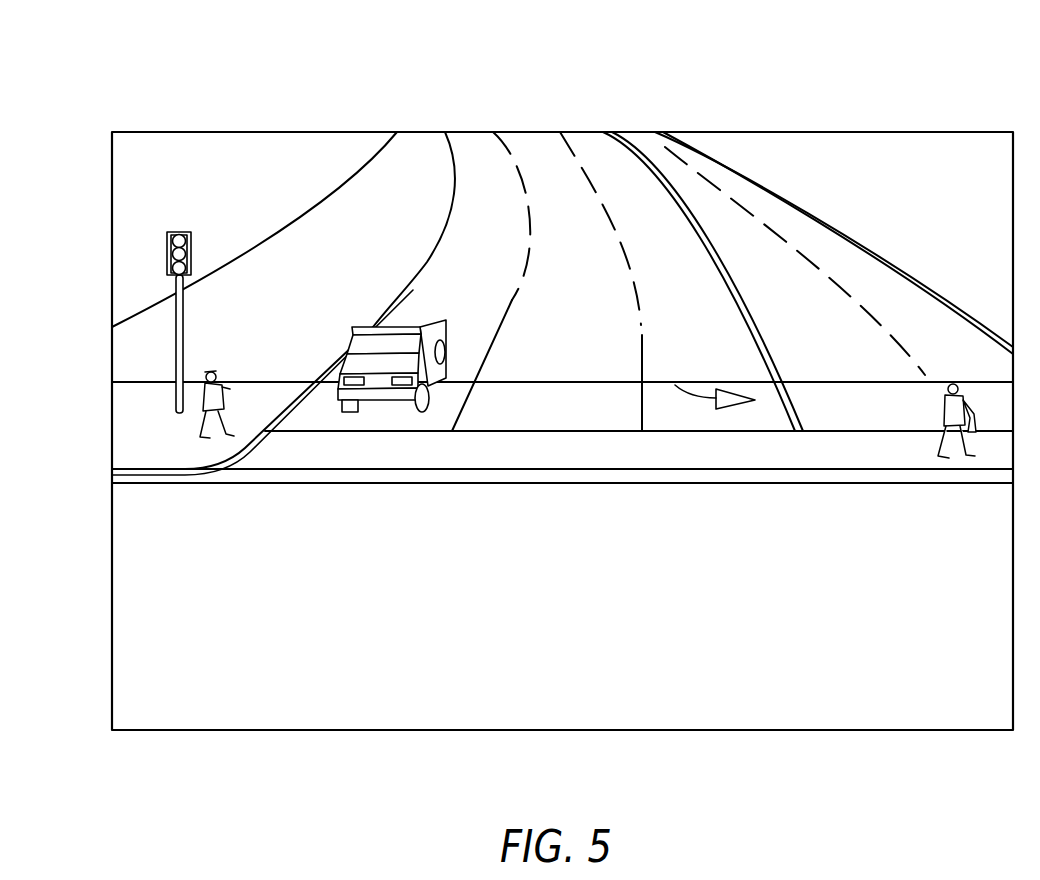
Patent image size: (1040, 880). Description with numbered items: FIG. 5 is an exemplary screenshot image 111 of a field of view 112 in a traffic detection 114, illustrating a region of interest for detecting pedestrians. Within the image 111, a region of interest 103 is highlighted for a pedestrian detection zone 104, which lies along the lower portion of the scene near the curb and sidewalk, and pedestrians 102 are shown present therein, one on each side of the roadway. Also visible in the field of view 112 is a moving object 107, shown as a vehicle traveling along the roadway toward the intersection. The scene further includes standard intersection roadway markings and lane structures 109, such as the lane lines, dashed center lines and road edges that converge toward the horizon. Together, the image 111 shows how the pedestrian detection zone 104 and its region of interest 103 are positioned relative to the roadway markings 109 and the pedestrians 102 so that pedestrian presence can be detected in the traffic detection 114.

The pedestrians 102 is at (228, 388).
The region of interest 103 is at (556, 503).
The pedestrian detection zone 104 is at (293, 460).
The moving objects 107 is at (368, 328).
The standard intersection roadway markings and lane structures 109 is at (525, 267).
The screenshot image 111 is at (254, 119).
The field of view 112 is at (137, 353).
The traffic detection 114 is at (510, 247).